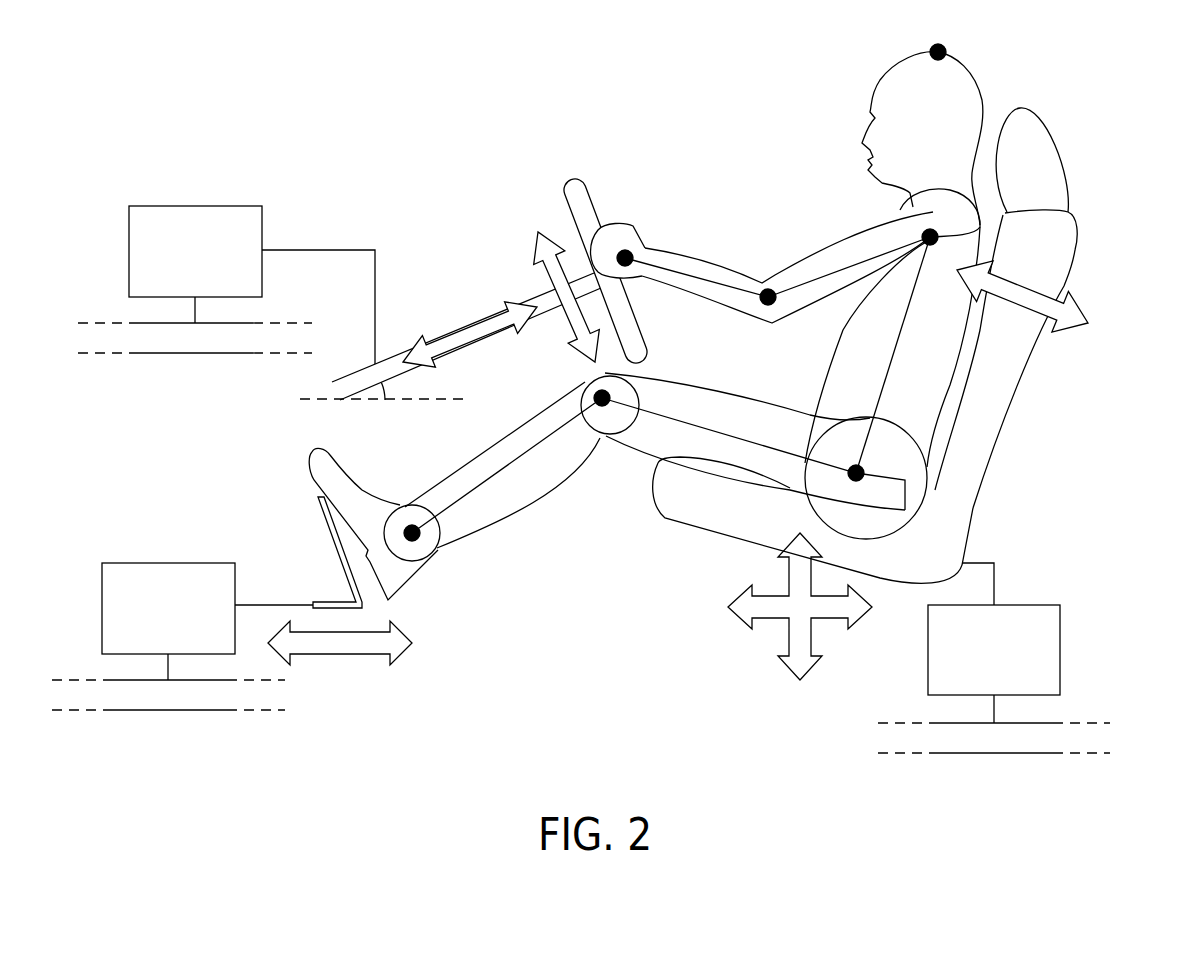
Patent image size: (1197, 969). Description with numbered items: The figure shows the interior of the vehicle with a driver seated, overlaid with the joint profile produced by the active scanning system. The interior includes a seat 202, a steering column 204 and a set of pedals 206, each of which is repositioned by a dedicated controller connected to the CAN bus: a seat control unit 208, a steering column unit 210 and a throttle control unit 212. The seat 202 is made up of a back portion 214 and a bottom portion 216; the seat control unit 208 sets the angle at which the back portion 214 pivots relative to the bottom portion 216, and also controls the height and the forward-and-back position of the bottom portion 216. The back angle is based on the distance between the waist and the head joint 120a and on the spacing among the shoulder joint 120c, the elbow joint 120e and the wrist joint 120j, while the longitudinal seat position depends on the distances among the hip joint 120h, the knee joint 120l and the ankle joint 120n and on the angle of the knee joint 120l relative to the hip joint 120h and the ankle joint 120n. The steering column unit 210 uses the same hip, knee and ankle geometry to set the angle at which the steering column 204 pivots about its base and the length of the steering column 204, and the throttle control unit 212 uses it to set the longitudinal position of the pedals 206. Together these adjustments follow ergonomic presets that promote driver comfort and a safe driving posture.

The head joint 120a is at (945, 48).
The shoulder joint 120c is at (938, 233).
The elbow joint 120e is at (768, 290).
The wrist joint 120j is at (624, 250).
The hip joint 120h is at (905, 435).
The knee joint 120l is at (602, 405).
The ankle joint 120n is at (433, 548).
The seat 202 is at (993, 450).
The steering column 204 is at (537, 293).
The set of pedals 206 is at (330, 530).
The seat control unit 208 is at (1060, 632).
The steering column unit 210 is at (195, 206).
The throttle control unit 212 is at (167, 563).
The back portion 214 is at (1067, 278).
The bottom portion 216 is at (703, 530).